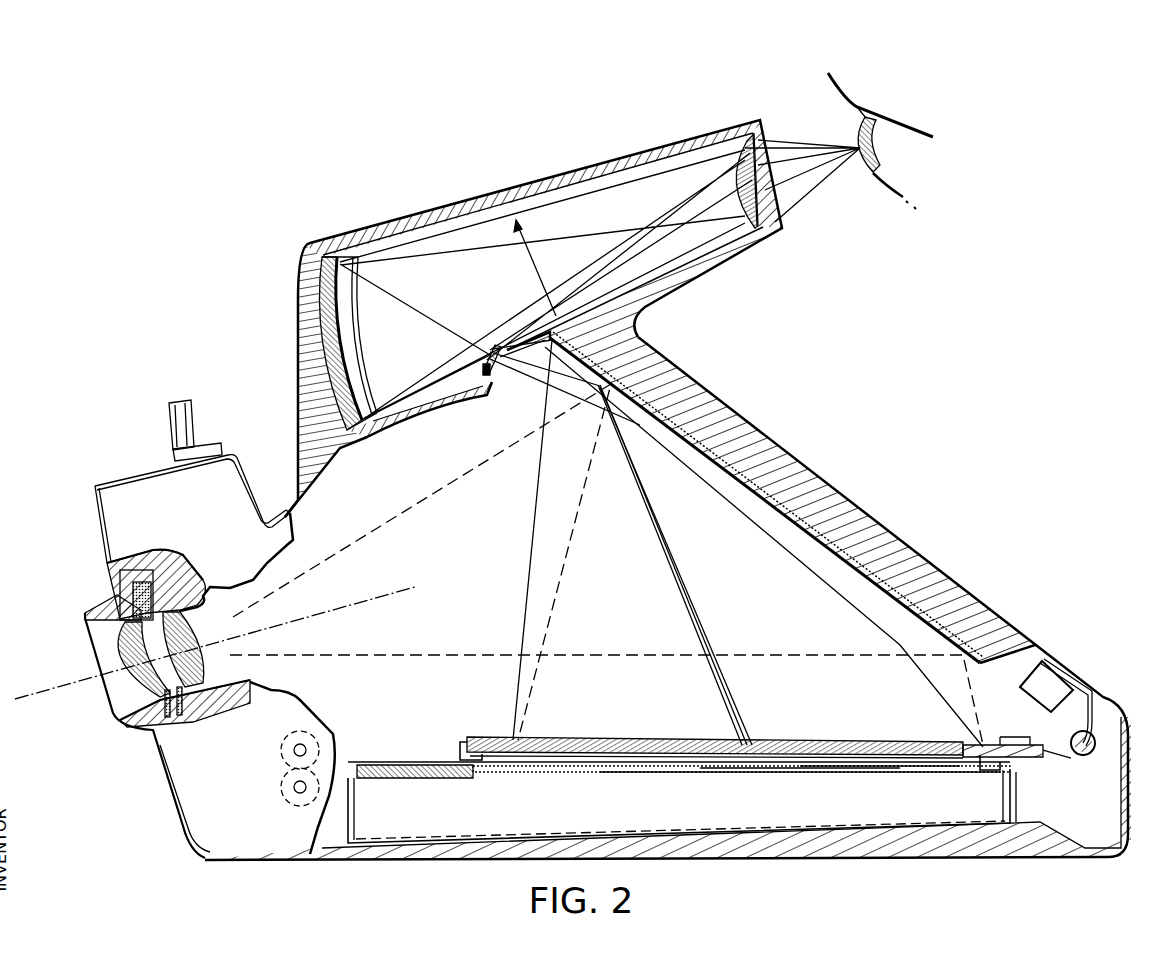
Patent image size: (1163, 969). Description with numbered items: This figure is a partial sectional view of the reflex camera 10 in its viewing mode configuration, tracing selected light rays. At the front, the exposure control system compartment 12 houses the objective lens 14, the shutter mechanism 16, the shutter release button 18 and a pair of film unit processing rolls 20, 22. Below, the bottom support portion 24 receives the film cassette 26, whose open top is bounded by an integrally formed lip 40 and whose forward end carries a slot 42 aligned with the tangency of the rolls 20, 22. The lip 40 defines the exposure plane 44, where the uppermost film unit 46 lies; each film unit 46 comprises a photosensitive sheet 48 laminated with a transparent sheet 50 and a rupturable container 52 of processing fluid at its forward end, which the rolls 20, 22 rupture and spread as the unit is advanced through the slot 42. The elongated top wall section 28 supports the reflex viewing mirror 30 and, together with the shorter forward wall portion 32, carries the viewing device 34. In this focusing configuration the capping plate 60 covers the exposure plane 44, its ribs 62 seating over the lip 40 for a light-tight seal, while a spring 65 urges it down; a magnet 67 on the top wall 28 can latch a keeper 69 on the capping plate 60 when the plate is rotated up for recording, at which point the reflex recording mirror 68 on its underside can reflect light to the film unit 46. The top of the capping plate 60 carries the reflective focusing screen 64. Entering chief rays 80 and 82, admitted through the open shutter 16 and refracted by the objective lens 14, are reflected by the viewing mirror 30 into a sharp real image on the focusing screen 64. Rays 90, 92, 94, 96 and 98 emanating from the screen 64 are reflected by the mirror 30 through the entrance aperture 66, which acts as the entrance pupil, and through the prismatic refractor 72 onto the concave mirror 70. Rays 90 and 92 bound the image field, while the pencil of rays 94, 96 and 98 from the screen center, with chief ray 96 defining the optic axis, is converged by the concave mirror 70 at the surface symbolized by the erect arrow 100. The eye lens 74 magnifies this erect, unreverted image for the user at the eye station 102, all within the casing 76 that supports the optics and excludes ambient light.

The reflex camera 10 is at (857, 473).
The exposure control system compartment 12 is at (90, 486).
The objective lens 14 is at (121, 655).
The shutter mechanism 16 is at (170, 580).
The shutter release button 18 is at (177, 400).
The film unit processing roll 20 is at (282, 745).
The film unit processing roll 22 is at (283, 787).
The bottom support portion 24 is at (898, 857).
The film cassette 26 is at (670, 812).
The top wall section 28 is at (839, 594).
The reflex viewing mirror 30 is at (896, 601).
The forward wall portion 32 is at (296, 500).
The viewing device 34 is at (533, 311).
The lip 40 is at (495, 767).
The slot 42 is at (347, 758).
The exposure plane 44 is at (715, 733).
The film unit 46 is at (740, 771).
The photosensitive sheet 48 is at (800, 769).
The transparent sheet 50 is at (855, 768).
The rupturable container 52 is at (420, 778).
The capping plate 60 is at (933, 748).
The ribs 62 is at (468, 748).
The reflective focusing screen 64 is at (876, 744).
The spring 65 is at (1097, 713).
The entrance aperture 66 is at (506, 362).
The magnet 67 is at (1060, 686).
The reflex recording mirror 68 is at (628, 757).
The keeper 69 is at (1021, 736).
The concave mirror 70 is at (358, 360).
The prismatic refractor 72 is at (494, 346).
The eye lens 74 is at (740, 196).
The casing 76 is at (689, 134).
The light ray 80 is at (405, 506).
The light ray 82 is at (470, 654).
The light ray 90 is at (527, 580).
The light ray 92 is at (795, 556).
The light ray 94 is at (668, 551).
The light ray 96 is at (646, 491).
The light ray 98 is at (656, 523).
The erect arrow 100 is at (523, 236).
The eye station 102 is at (880, 112).